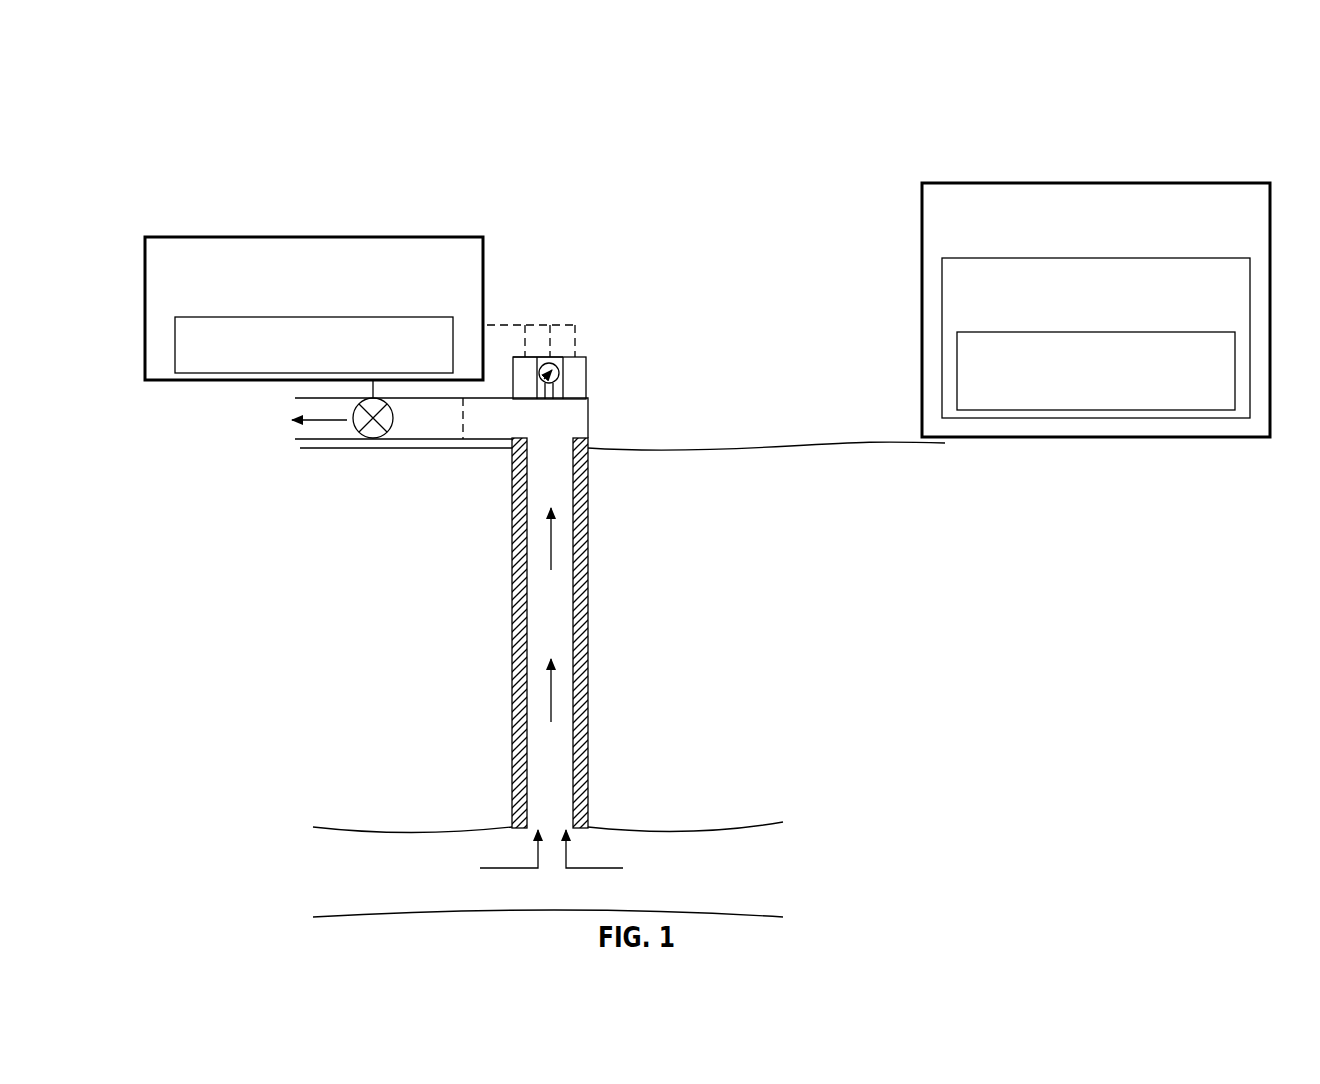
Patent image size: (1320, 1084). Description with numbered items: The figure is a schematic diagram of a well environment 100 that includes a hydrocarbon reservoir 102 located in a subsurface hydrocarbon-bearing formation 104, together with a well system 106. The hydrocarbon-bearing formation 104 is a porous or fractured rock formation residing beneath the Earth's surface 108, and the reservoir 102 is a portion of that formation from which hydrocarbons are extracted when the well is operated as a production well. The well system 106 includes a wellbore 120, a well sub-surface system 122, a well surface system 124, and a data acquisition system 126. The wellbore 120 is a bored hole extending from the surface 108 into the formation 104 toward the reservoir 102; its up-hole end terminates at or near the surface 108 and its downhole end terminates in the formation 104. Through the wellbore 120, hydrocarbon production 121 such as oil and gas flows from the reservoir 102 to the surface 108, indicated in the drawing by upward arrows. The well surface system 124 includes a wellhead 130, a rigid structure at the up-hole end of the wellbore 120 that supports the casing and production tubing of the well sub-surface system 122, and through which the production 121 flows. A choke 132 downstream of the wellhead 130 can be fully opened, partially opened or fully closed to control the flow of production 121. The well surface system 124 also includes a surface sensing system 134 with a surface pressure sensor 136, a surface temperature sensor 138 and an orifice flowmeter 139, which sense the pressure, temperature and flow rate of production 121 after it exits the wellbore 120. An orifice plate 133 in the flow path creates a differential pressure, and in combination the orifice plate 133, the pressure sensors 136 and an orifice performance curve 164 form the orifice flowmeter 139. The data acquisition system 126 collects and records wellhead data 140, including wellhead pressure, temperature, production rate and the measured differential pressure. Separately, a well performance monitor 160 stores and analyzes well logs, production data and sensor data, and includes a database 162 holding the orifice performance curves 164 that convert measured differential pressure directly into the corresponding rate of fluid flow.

The well environment 100 is at (713, 109).
The hydrocarbon reservoir 102 is at (727, 906).
The hydrocarbon-bearing formation 104 is at (762, 757).
The well system 106 is at (274, 222).
The surface 108 is at (823, 450).
The wellbore 120 is at (591, 573).
The production 121 is at (213, 468).
The well sub-surface system 122 is at (509, 640).
The well surface system 124 is at (743, 197).
The data acquisition system 126 is at (229, 237).
The wellhead 130 is at (592, 442).
The choke 132 is at (373, 440).
The orifice plate 133 is at (463, 440).
The surface sensing system 134 is at (592, 383).
The surface pressure sensor 136 is at (580, 357).
The surface temperature sensor 138 is at (557, 357).
The orifice flowmeter 139 is at (532, 357).
The wellhead data 140 is at (250, 317).
The well performance monitor 160 is at (1208, 183).
The database 162 is at (1185, 258).
The orifice performance curve 164 is at (1170, 332).